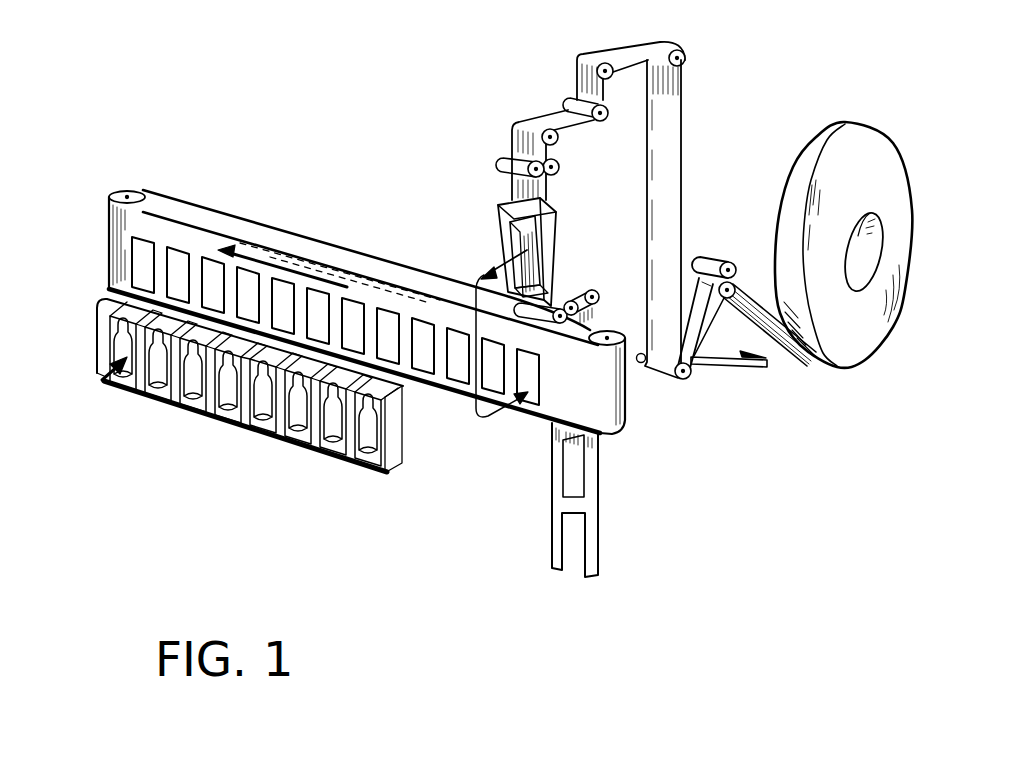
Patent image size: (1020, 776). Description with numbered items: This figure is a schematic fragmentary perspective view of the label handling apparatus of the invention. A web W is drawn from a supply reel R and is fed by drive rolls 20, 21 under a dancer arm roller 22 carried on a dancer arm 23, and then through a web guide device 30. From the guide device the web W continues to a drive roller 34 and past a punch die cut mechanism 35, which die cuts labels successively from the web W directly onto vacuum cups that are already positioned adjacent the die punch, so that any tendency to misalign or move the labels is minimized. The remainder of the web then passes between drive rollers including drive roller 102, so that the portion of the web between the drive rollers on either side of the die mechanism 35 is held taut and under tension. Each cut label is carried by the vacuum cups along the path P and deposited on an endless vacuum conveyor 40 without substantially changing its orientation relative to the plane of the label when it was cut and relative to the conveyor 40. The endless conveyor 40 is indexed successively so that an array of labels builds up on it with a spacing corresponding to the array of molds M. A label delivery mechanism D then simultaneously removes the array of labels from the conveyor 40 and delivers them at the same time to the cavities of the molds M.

The drive roll 20 is at (726, 262).
The drive roll 21 is at (727, 298).
The dancer arm roller 22 is at (688, 380).
The dancer arm 23 is at (748, 364).
The web guide device 30 is at (623, 47).
The drive roller 34 is at (512, 123).
The punch die cut mechanism 35 is at (552, 228).
The endless vacuum conveyor 40 is at (331, 262).
The drive roller 102 is at (588, 290).
The web W is at (678, 207).
The reel R is at (858, 157).
The label delivery mechanism D is at (98, 310).
The mold M is at (230, 415).
The path P is at (477, 412).